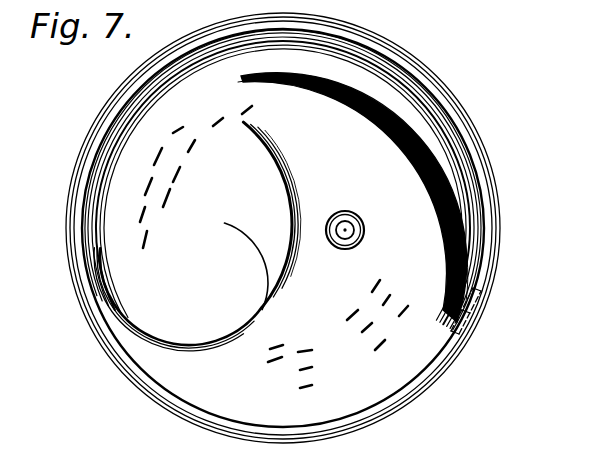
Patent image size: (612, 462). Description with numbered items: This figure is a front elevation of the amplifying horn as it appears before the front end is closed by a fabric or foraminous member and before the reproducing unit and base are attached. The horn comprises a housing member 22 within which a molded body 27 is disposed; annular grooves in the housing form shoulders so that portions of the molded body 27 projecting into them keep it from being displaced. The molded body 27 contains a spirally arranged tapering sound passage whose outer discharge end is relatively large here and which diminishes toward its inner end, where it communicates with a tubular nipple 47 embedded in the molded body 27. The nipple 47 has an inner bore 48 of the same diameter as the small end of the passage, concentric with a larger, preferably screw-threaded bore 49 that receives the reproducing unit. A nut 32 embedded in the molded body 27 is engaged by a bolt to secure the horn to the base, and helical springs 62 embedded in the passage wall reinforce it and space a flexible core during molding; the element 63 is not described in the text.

The housing member 22 is at (98, 337).
The molded body 27 is at (433, 133).
The nut 32 is at (483, 318).
The tubular nipple 47 is at (353, 213).
The bore 48 is at (352, 232).
The bore 49 is at (364, 227).
The helical springs 62 is at (193, 137).
The apertures 63 is at (363, 328).